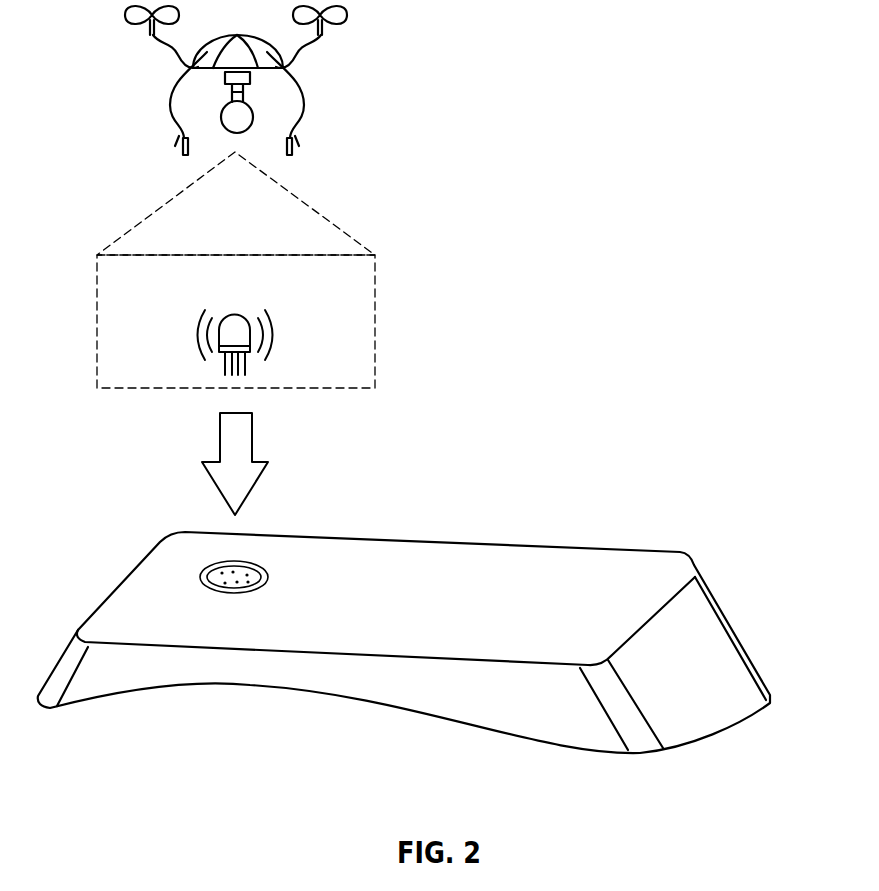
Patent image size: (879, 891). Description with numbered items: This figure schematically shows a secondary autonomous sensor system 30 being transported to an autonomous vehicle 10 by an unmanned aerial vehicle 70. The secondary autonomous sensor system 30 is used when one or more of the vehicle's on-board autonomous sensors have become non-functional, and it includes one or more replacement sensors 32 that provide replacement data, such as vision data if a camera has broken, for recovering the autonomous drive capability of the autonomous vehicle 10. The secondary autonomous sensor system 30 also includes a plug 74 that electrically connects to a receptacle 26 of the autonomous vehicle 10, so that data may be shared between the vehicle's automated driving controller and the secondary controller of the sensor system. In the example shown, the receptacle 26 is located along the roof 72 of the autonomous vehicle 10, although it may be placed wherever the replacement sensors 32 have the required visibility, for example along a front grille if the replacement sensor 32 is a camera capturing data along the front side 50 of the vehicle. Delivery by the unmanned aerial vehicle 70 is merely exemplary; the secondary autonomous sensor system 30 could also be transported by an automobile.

The autonomous vehicle 10 is at (425, 615).
The receptacle 26 is at (258, 565).
The secondary autonomous sensor system 30 is at (318, 210).
The replacement sensor 32 is at (243, 315).
The front side 50 is at (703, 550).
The unmanned aerial vehicle 70 is at (332, 88).
The roof 72 is at (552, 560).
The plug 74 is at (250, 372).